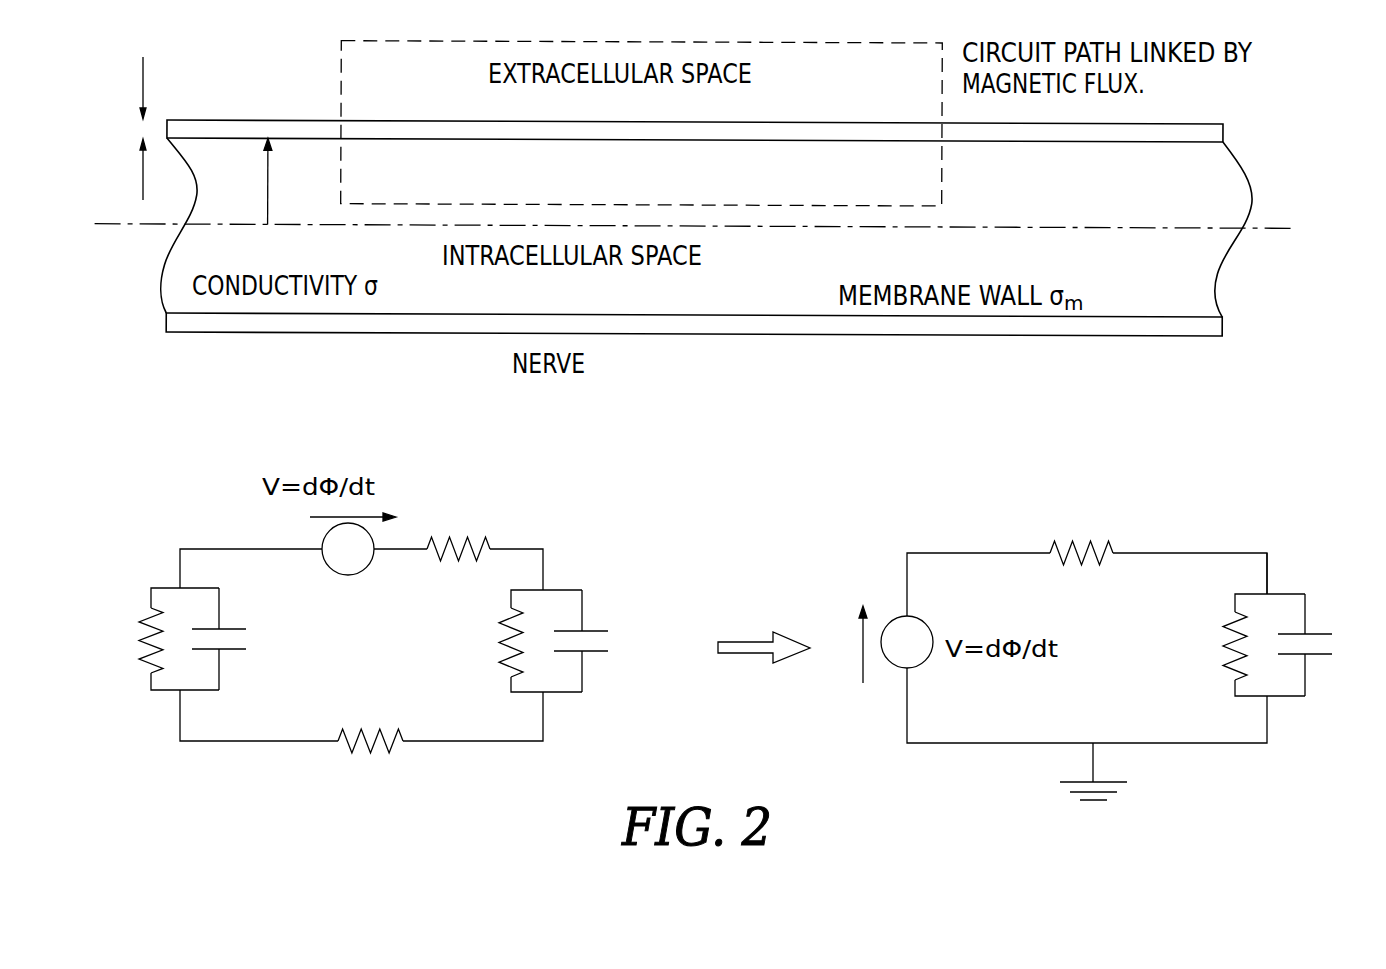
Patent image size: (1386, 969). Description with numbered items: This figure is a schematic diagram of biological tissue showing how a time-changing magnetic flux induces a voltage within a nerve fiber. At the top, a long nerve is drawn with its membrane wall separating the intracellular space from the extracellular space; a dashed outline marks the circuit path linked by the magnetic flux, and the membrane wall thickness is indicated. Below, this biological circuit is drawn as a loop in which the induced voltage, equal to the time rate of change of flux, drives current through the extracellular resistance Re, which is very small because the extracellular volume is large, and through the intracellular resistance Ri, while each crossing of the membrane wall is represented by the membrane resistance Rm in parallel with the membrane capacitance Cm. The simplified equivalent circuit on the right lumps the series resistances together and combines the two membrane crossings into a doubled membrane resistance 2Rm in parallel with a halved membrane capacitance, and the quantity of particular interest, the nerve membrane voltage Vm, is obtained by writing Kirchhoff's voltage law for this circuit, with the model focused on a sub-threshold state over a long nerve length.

The membrane resistance Rm is at (336, 640).
The capacitance of the membrane wall Cm is at (426, 640).
The intracellular resistance Ri is at (370, 764).
The extracellular resistance Re is at (458, 525).
The doubled membrane resistance 2Rm is at (1236, 645).
The nerve membrane voltage Vm is at (1292, 573).